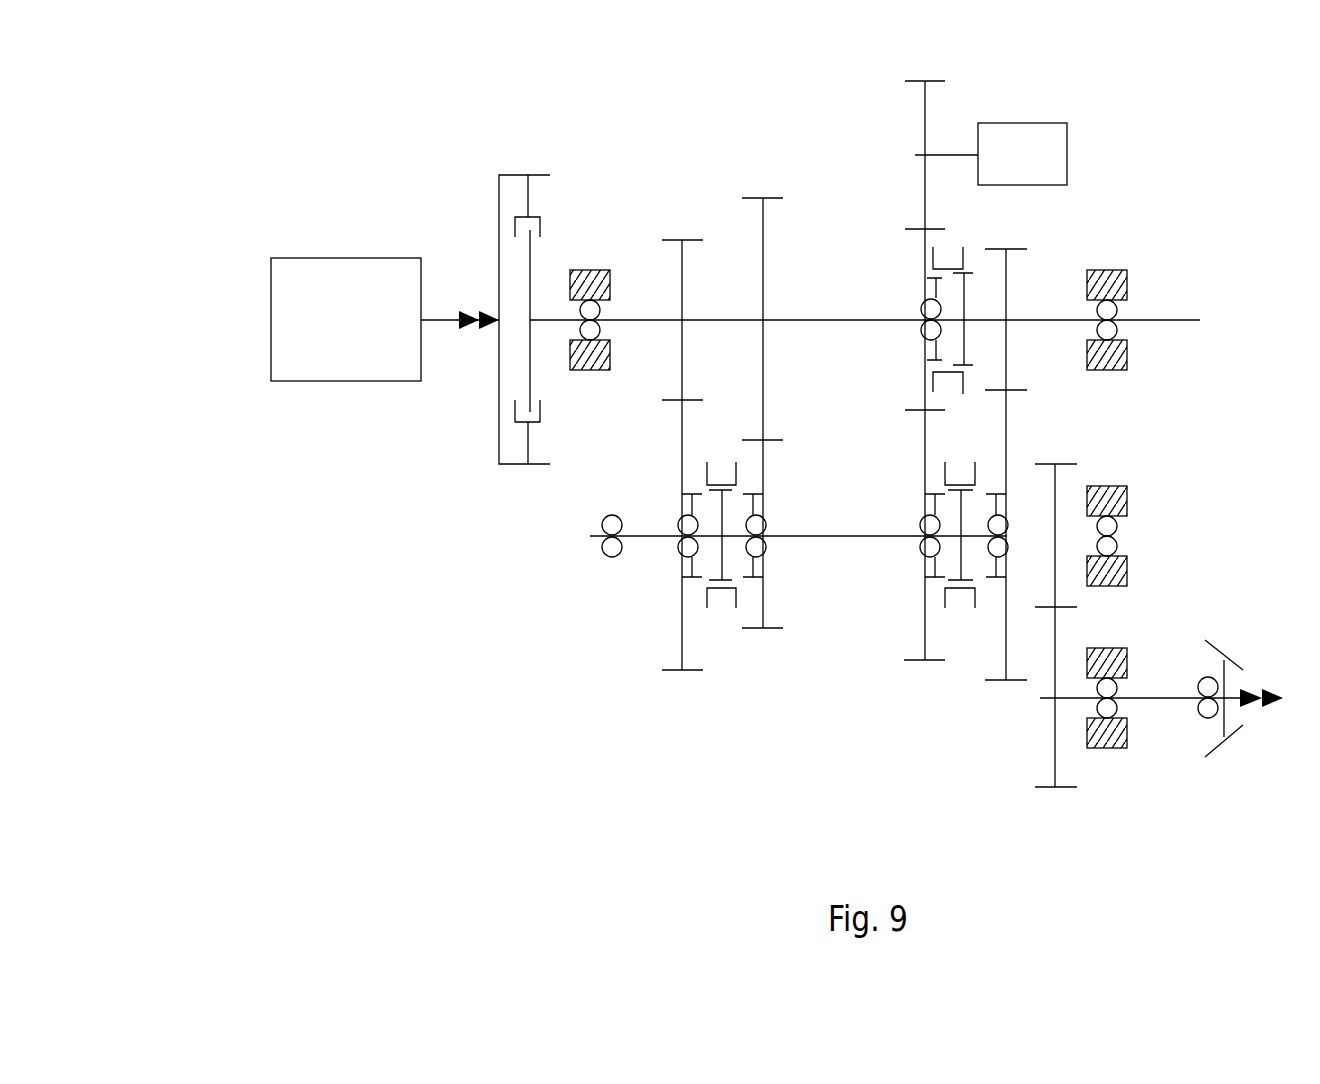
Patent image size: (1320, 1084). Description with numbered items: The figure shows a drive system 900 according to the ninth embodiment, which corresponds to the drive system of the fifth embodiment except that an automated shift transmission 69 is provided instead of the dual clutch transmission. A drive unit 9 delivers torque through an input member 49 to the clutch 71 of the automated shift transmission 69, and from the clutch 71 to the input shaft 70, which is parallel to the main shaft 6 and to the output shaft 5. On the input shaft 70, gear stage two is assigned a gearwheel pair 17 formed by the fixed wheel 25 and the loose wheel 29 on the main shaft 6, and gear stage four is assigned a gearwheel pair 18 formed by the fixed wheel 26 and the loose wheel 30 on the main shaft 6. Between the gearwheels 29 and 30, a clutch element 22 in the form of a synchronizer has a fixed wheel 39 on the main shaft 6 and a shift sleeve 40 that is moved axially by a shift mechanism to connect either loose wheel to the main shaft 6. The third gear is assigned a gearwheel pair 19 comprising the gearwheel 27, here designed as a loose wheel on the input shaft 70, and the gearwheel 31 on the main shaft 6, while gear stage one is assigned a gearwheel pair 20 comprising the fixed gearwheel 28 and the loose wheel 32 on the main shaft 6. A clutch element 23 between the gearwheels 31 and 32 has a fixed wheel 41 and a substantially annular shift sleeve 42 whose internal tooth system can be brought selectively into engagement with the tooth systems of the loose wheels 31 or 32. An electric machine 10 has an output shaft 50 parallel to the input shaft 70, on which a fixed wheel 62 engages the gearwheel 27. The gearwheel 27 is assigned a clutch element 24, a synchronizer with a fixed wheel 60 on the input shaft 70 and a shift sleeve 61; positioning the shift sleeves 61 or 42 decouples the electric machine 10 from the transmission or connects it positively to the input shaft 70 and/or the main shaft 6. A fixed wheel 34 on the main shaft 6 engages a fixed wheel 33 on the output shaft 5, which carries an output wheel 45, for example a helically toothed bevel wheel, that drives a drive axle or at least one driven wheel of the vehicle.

The drive system 900 is at (393, 152).
The drive unit 9 is at (333, 339).
The input shaft 49 is at (440, 320).
The clutch 71 is at (517, 175).
The gearwheel pair 17 is at (680, 237).
The gearwheel 25 is at (682, 271).
The gearwheel pair 18 is at (760, 196).
The gearwheel 26 is at (773, 198).
The automated shift transmission 69 is at (812, 193).
The fixed wheel 62 is at (925, 177).
The output shaft 50 is at (957, 155).
The electric machine 10 is at (1008, 164).
The gearwheel pair 20 is at (1013, 246).
The gearwheel 27 is at (925, 256).
The gearwheel 28 is at (1006, 291).
The input shaft 70 is at (1142, 320).
The fixed wheel 60 is at (964, 340).
The shift sleeve 61 is at (932, 382).
The clutch element 24 is at (953, 397).
The fixed wheel 34 is at (1068, 464).
The main shaft 6 is at (644, 536).
The gearwheel 29 is at (682, 613).
The fixed wheel 39 is at (722, 548).
The clutch element 22 is at (717, 605).
The shift sleeve 40 is at (736, 595).
The gearwheel 30 is at (763, 595).
The gearwheel 31 is at (925, 613).
The gearwheel pair 19 is at (921, 667).
The fixed wheel 41 is at (961, 564).
The shift sleeve 42 is at (976, 598).
The clutch element 23 is at (963, 598).
The gearwheel 32 is at (1011, 680).
The fixed wheel 33 is at (1055, 762).
The output shaft 5 is at (1149, 698).
The output wheel 45 is at (1232, 733).